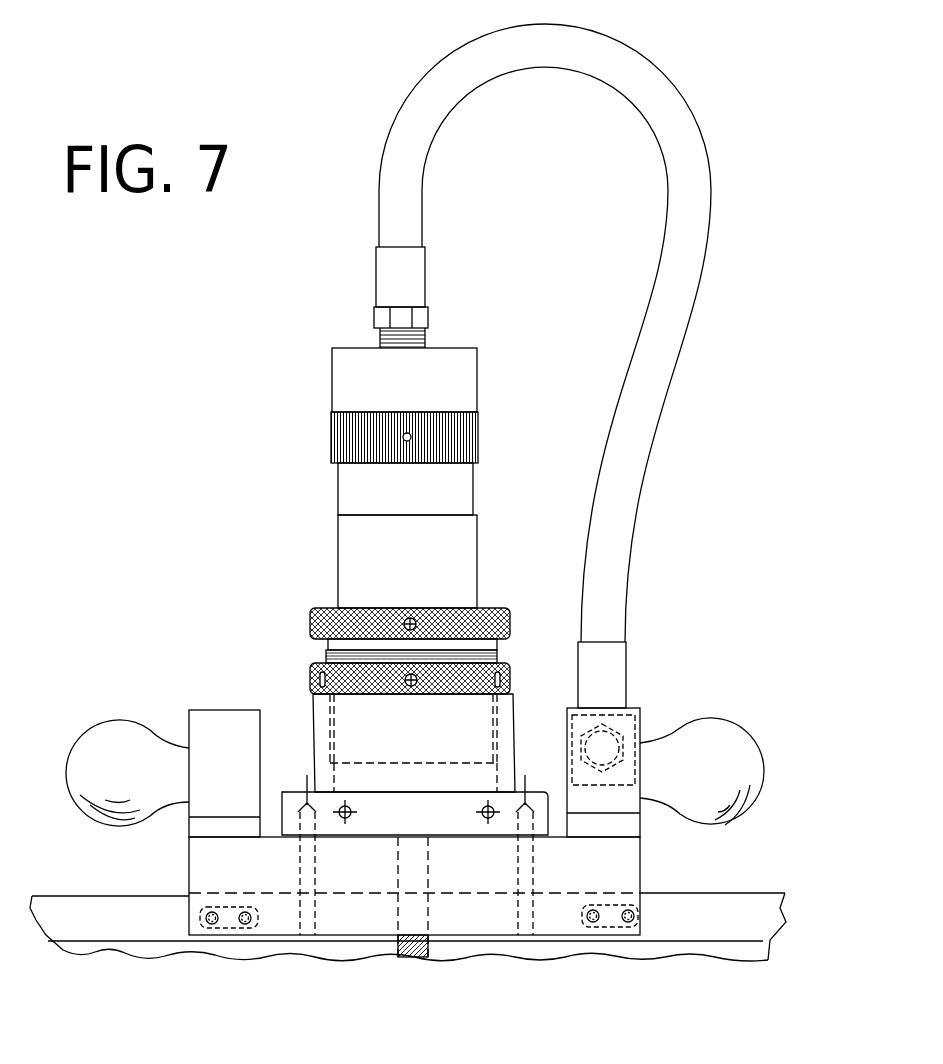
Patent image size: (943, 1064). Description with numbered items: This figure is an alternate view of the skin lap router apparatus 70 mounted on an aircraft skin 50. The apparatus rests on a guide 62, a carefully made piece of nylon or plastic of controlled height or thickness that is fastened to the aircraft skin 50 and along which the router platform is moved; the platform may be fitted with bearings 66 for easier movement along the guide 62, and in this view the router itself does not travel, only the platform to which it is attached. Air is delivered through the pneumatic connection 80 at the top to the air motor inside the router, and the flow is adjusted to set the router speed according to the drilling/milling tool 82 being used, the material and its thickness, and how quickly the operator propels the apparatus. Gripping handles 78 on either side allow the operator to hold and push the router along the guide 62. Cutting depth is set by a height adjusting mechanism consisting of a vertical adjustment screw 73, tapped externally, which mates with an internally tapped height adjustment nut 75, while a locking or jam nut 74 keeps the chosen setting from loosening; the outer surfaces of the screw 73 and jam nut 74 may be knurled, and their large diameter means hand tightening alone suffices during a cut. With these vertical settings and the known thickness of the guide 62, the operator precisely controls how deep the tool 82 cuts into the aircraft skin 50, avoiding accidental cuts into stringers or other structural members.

The aircraft skin 50 is at (723, 932).
The guide 62 is at (670, 910).
The bearings 66 is at (225, 927).
The router apparatus 70 is at (530, 487).
The vertical adjustment screw 73 is at (508, 617).
The jam nut 74 is at (513, 665).
The height adjustment nut 75 is at (517, 718).
The gripping handles 78 is at (128, 720).
The pneumatic connection 80 is at (408, 272).
The drilling/milling tool 82 is at (427, 948).